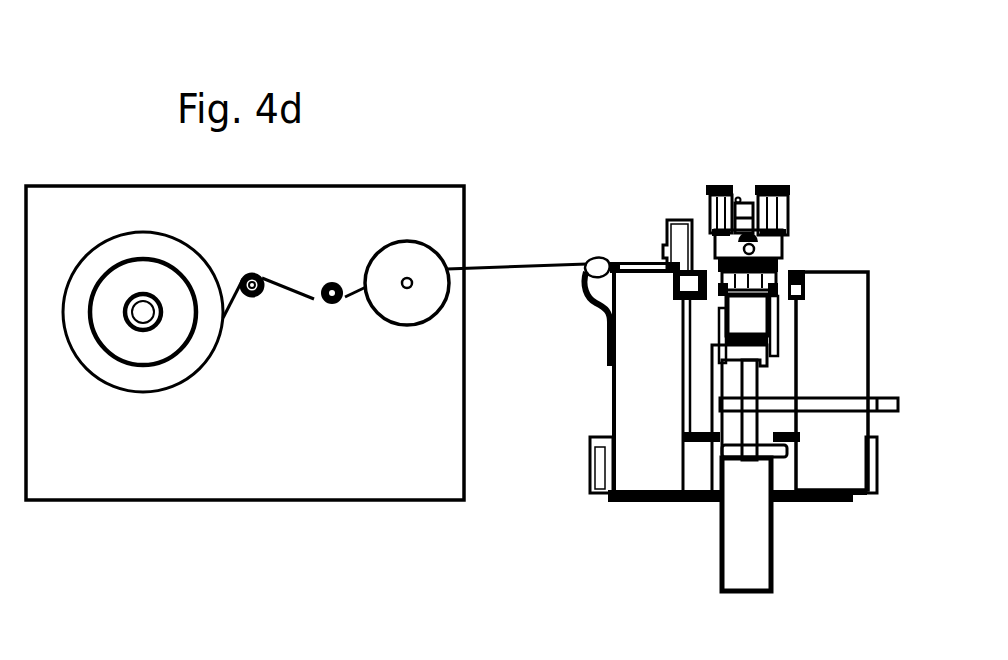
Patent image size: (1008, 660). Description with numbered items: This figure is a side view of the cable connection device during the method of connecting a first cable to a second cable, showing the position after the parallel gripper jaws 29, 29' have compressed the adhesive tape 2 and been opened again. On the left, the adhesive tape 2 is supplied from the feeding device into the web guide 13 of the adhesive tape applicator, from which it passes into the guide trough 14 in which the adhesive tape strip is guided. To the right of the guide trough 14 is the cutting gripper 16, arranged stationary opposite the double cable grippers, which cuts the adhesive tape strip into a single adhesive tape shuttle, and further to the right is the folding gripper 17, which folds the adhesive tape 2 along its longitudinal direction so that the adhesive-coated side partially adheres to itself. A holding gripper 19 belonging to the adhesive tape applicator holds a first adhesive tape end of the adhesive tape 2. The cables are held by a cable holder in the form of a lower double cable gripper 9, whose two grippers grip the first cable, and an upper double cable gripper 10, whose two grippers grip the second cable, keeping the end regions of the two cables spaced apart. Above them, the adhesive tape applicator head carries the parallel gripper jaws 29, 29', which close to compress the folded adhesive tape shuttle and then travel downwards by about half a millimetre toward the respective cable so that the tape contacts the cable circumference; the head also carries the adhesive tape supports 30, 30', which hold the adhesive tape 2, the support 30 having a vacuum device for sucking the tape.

The adhesive tape 2 is at (538, 265).
The lower double cable gripper 9 is at (760, 227).
The upper double cable gripper 10 is at (765, 220).
The web guide 13 is at (595, 258).
The guide trough 14 is at (638, 262).
The cutting gripper 16 is at (675, 220).
The folding gripper 17 is at (699, 280).
The holding gripper 19 is at (800, 270).
The parallel gripper jaw 29 is at (750, 167).
The parallel gripper jaw 29' is at (729, 155).
The adhesive tape support 30 is at (698, 168).
The adhesive tape support 30' is at (796, 153).